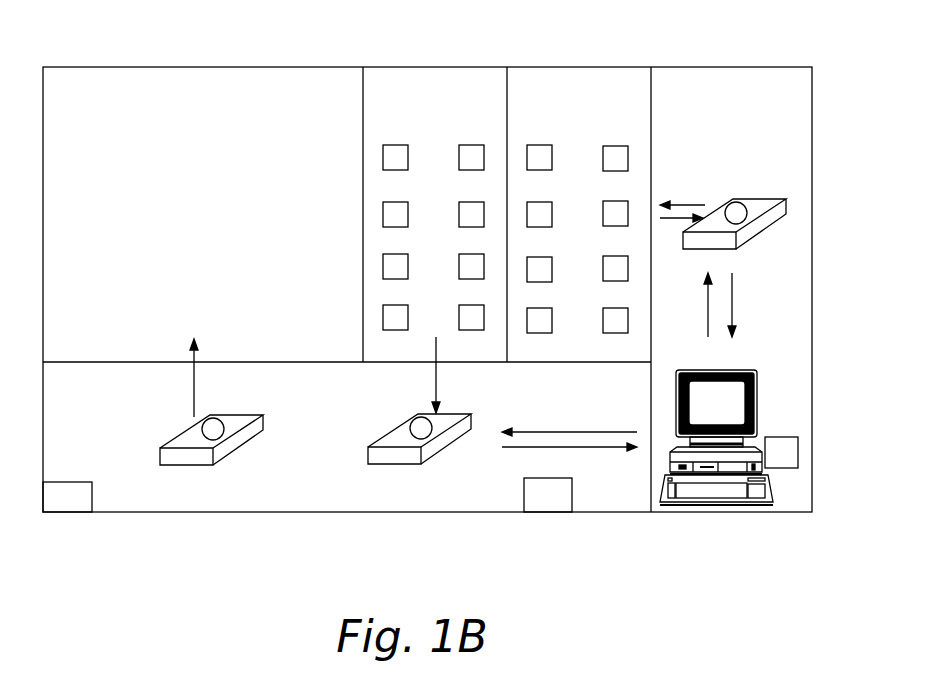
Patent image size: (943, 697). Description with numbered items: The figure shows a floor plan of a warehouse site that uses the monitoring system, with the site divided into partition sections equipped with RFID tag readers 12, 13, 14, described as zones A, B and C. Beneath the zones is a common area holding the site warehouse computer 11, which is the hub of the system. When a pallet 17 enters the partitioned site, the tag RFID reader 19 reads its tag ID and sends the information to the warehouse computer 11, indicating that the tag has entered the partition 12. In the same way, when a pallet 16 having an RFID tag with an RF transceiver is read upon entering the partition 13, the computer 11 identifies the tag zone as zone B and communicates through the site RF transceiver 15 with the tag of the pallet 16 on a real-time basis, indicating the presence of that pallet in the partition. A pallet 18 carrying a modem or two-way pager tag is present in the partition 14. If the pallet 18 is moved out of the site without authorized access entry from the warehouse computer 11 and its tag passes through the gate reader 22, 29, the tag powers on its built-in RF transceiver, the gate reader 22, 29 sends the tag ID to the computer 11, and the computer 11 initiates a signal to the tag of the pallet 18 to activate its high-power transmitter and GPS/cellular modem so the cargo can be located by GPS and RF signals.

The site warehouse computer 11 is at (757, 392).
The partition with RFID tag reader (zone A) 12 is at (193, 95).
The partition with RFID tag reader (zone B) 13 is at (446, 97).
The partition with RFID tag reader (zone C) 14 is at (740, 96).
The site RF transceiver 15 is at (798, 463).
The pallet 16 is at (422, 464).
The pallet 17 is at (197, 465).
The pallet 18 is at (758, 238).
The tag RFID reader 19 is at (197, 422).
The gate reader 22 is at (548, 513).
The gate reader 29 is at (67, 513).